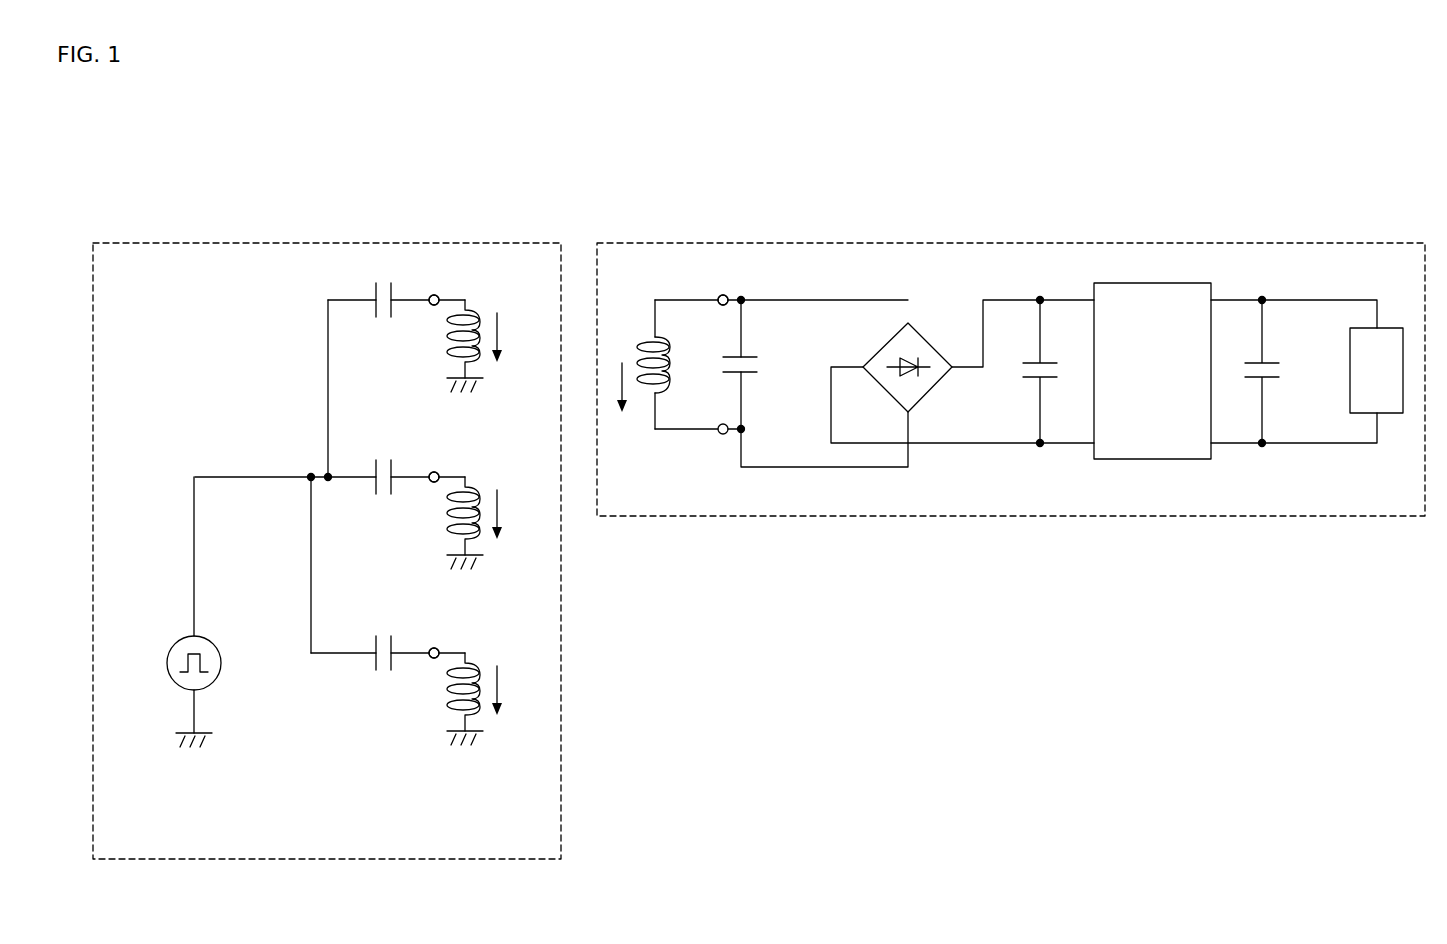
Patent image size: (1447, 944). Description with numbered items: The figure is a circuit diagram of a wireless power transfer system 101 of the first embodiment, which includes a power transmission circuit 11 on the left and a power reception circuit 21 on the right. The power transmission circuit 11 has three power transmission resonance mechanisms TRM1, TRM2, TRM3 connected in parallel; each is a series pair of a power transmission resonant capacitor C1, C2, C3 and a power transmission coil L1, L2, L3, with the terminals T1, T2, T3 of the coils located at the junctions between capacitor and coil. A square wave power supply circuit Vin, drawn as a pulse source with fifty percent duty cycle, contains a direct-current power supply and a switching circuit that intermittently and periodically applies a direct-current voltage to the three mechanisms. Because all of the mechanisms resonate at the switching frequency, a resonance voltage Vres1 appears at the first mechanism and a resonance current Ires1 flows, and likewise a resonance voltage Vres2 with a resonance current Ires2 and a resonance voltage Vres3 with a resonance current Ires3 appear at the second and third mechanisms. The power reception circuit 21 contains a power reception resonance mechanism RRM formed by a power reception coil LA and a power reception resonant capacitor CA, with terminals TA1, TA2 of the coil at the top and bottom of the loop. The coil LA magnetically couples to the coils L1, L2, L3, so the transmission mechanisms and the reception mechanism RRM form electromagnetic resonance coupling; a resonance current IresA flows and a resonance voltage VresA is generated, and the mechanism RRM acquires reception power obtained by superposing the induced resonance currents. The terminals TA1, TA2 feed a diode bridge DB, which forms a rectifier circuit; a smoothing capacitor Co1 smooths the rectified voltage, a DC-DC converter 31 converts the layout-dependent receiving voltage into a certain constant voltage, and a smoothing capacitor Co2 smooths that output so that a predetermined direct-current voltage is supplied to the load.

The wireless power transfer system 101 is at (1289, 142).
The power transmission circuit 11 is at (328, 243).
The power reception circuit 21 is at (962, 243).
The DC-DC converter 31 is at (1152, 283).
The square wave power supply circuit Vin is at (178, 612).
The power transmission resonance mechanism TRM1 is at (390, 370).
The power transmission resonance mechanism TRM2 is at (390, 528).
The power transmission resonance mechanism TRM3 is at (390, 712).
The power transmission resonant capacitor C1 is at (383, 283).
The power transmission resonant capacitor C2 is at (383, 460).
The power transmission resonant capacitor C3 is at (383, 637).
The power transmission coil L1 is at (477, 337).
The power transmission coil L2 is at (477, 514).
The power transmission coil L3 is at (477, 689).
The terminal T1 is at (434, 305).
The terminal T2 is at (434, 482).
The terminal T3 is at (434, 658).
The resonance voltage Vres1 is at (434, 295).
The resonance voltage Vres2 is at (434, 472).
The resonance voltage Vres3 is at (434, 648).
The resonance current Ires1 is at (531, 337).
The resonance current Ires2 is at (531, 514).
The resonance current Ires3 is at (531, 690).
The power reception resonance mechanism RRM is at (690, 408).
The power reception coil LA is at (642, 364).
The power reception resonant capacitor CA is at (764, 366).
The terminal TA1 is at (731, 297).
The terminal TA2 is at (725, 434).
The resonance voltage VresA is at (718, 298).
The resonance current IresA is at (609, 405).
The diode bridge DB is at (913, 363).
The smoothing capacitor Co1 is at (1017, 372).
The smoothing capacitor Co2 is at (1285, 372).